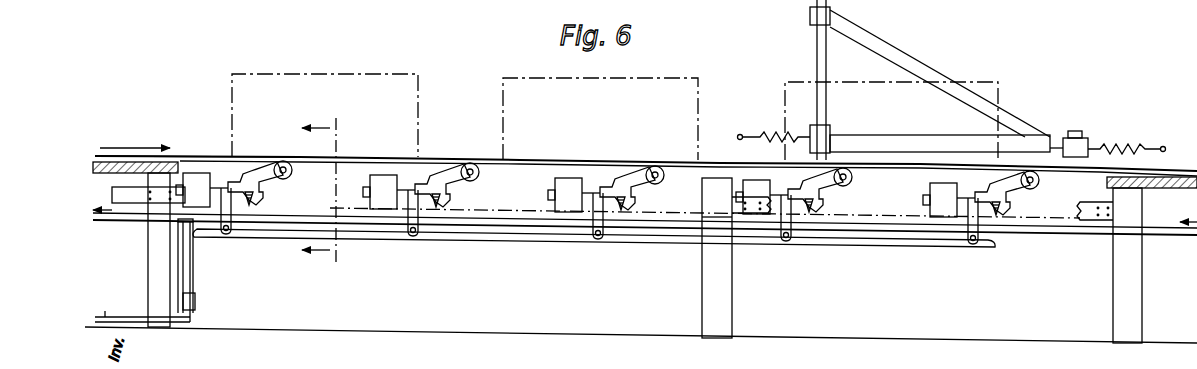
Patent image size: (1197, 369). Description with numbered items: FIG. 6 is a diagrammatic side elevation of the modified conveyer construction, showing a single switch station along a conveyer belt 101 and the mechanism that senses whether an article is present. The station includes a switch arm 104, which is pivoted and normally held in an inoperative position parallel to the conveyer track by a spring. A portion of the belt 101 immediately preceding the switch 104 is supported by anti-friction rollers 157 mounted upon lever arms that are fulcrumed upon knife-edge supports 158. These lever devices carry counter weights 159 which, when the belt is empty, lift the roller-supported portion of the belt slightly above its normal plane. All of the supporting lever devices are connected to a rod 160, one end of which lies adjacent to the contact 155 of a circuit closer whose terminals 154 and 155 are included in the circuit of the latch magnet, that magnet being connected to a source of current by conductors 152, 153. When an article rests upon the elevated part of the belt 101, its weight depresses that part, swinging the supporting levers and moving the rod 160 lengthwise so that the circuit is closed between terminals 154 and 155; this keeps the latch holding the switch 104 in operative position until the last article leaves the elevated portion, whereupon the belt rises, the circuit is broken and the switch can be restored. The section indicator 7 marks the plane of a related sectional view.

The belt 101 is at (198, 156).
The switch arm 104 is at (862, 143).
The conductor 152 is at (123, 313).
The conductor 153 is at (105, 317).
The terminal 154 is at (172, 263).
The contact 155 is at (190, 257).
The anti-friction rollers 157 is at (482, 175).
The knife-edge supports 158 is at (434, 207).
The counter weights 159 is at (380, 209).
The rod 160 is at (542, 230).
The section line 7 is at (321, 191).